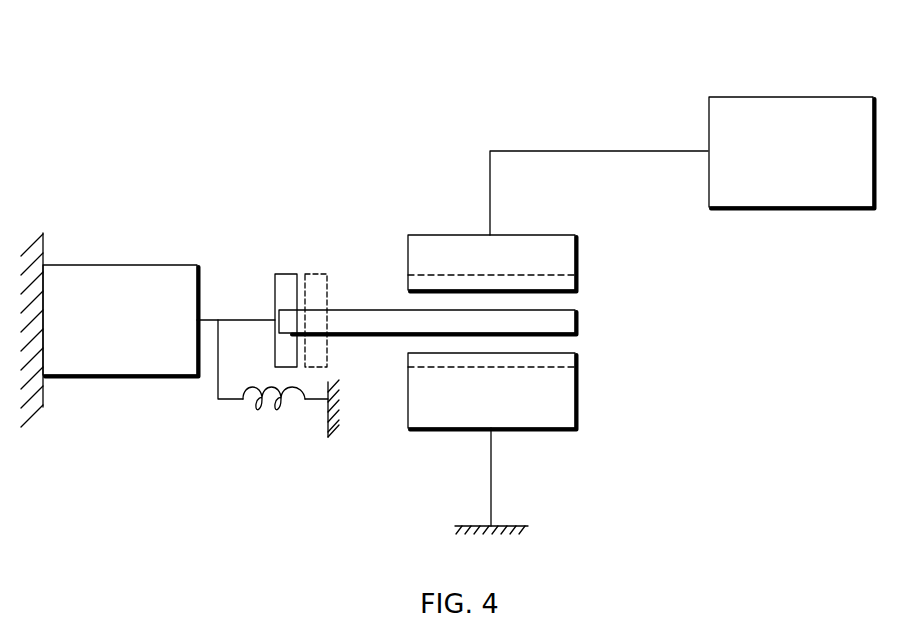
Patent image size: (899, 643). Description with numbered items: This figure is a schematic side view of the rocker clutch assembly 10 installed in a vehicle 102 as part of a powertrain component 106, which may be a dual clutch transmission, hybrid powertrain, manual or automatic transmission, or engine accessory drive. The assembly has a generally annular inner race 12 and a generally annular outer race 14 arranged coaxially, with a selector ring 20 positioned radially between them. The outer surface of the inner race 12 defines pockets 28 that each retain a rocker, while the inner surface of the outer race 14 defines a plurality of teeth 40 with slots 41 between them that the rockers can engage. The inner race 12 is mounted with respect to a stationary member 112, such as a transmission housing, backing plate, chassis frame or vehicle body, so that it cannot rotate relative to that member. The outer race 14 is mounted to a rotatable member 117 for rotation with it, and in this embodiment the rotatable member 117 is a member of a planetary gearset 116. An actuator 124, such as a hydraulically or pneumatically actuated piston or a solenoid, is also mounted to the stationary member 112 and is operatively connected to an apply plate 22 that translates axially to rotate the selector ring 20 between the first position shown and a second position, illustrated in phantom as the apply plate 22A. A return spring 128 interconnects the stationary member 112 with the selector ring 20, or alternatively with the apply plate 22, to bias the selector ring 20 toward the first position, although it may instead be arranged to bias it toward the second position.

The rocker clutch assembly 10 is at (250, 181).
The inner race 12 is at (577, 362).
The outer race 14 is at (577, 250).
The selector ring 20 is at (387, 310).
The apply plate 22 is at (288, 274).
The apply plate in second position 22A is at (316, 274).
The pockets 28 is at (542, 366).
The teeth 40 is at (577, 280).
The slots 41 is at (542, 276).
The vehicle 102 is at (636, 115).
The powertrain component 106 is at (783, 85).
The stationary member 112 is at (43, 390).
The planetary gearset 116 is at (808, 208).
The rotatable member 117 is at (490, 184).
The actuator 124 is at (110, 265).
The return spring 128 is at (257, 410).